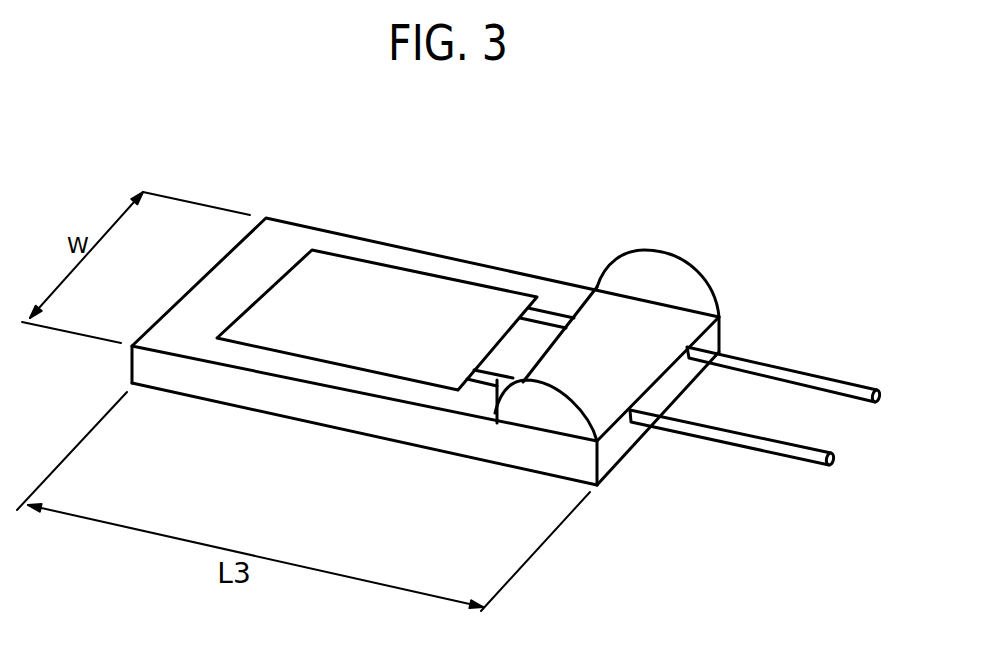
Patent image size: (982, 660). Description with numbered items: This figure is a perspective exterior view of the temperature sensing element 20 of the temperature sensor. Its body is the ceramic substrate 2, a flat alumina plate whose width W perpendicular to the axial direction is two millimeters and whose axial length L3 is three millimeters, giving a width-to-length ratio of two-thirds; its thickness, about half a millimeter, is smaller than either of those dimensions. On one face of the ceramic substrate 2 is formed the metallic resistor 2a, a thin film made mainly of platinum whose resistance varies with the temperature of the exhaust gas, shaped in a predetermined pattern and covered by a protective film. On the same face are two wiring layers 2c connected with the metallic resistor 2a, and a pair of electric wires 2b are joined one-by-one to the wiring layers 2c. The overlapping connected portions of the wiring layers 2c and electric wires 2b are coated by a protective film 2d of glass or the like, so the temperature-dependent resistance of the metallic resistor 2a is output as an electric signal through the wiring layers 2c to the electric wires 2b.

The temperature sensing element 20 is at (625, 158).
The ceramic substrate 2 is at (368, 412).
The metallic resistor 2a is at (453, 322).
The electric wires 2b is at (780, 372).
The wiring layers 2c is at (555, 318).
The protective film 2d is at (652, 283).